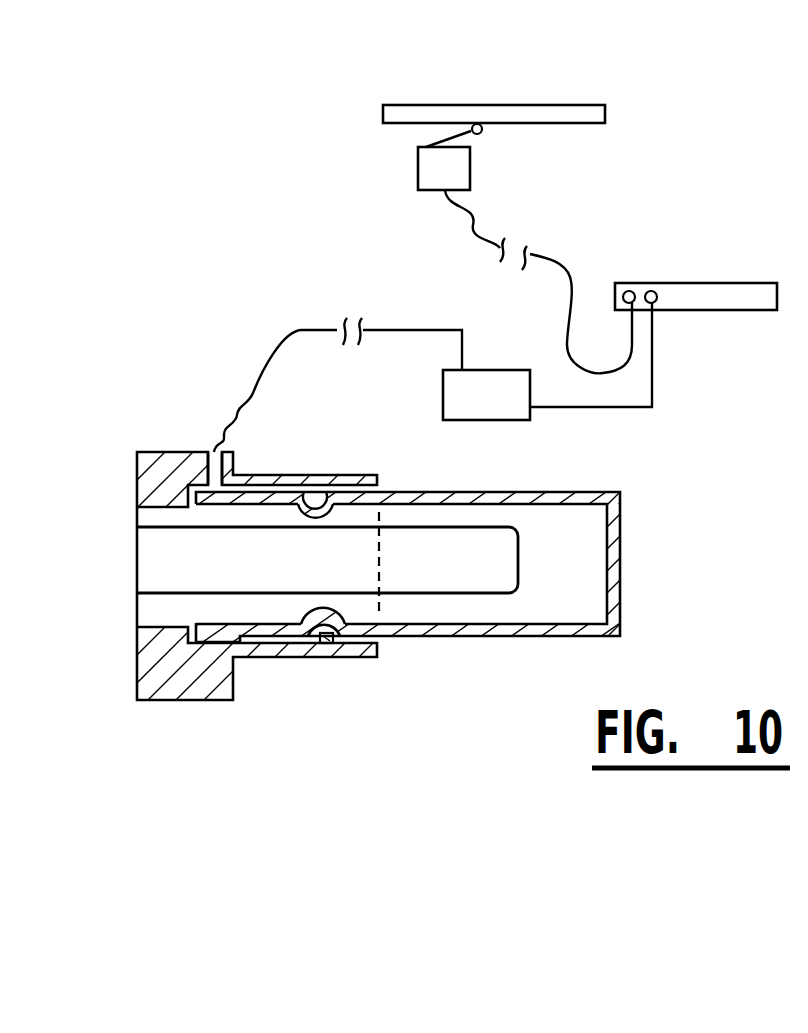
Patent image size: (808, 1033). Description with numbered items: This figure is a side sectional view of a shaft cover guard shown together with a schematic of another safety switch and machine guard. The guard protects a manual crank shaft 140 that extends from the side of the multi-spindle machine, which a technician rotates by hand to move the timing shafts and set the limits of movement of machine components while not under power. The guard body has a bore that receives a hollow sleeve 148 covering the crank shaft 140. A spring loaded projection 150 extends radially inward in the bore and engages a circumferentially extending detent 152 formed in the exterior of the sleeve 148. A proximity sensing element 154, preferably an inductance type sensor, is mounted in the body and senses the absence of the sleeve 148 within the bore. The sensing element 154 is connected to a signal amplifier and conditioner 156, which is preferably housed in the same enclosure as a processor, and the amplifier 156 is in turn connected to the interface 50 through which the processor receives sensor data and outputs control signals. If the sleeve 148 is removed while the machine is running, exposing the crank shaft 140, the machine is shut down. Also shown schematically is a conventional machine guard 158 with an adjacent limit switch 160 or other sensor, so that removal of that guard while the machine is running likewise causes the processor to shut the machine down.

The interface 50 is at (673, 310).
The manual crank shaft 140 is at (430, 572).
The hollow sleeve 148 is at (580, 493).
The spring loaded projection 150 is at (332, 643).
The circumferentially extending detent 152 is at (305, 618).
The proximity sensing element 154 is at (203, 452).
The signal amplifier and conditioner 156 is at (443, 380).
The machine guard 158 is at (567, 105).
The limit switch 160 is at (470, 162).